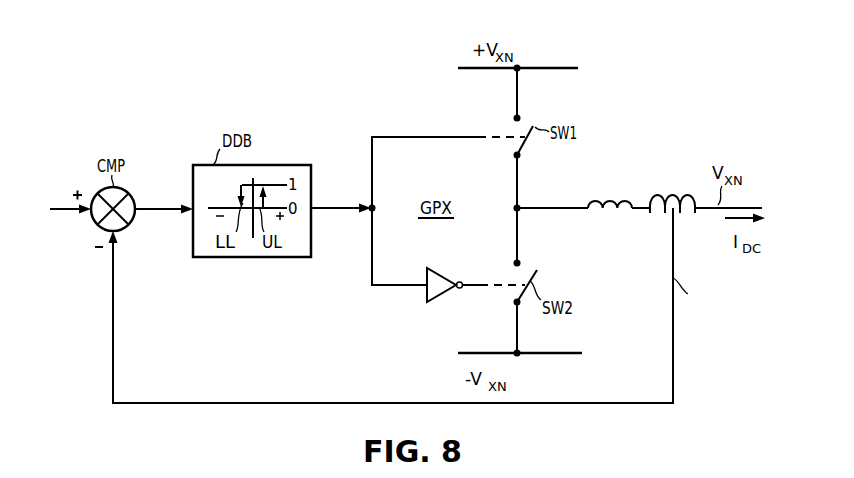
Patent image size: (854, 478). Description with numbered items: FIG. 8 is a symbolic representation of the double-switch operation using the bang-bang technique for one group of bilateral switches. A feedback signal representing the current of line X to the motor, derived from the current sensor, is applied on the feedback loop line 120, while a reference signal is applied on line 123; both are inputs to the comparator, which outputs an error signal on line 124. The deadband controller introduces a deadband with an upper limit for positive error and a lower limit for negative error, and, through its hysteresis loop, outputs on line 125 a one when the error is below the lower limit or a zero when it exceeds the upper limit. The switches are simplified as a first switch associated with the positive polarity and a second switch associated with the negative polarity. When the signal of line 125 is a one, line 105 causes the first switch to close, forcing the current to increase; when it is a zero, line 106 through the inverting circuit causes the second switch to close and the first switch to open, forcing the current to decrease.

The line 105 is at (397, 137).
The line 106 is at (392, 286).
The feedback loop line 120 is at (113, 335).
The reference signal line 123 is at (57, 214).
The error signal line 124 is at (162, 205).
The deadband controller output line 125 is at (328, 204).